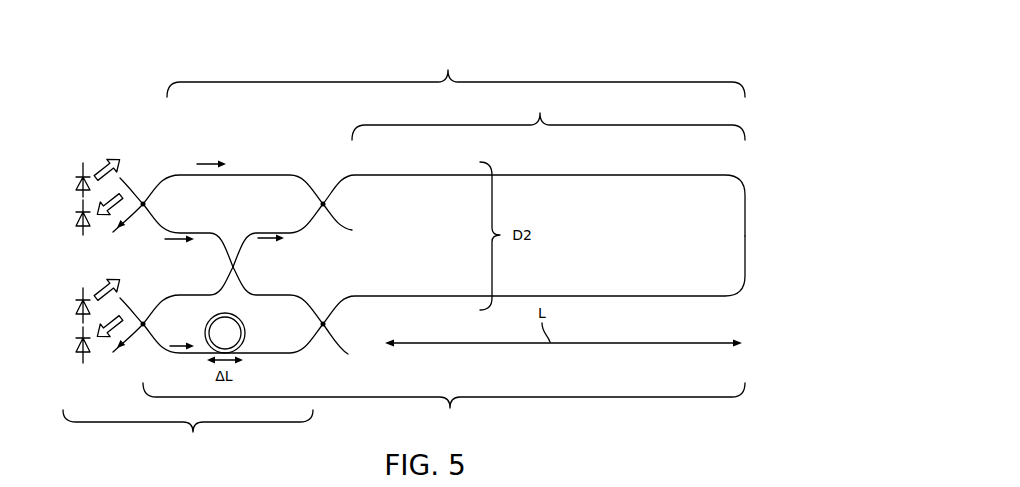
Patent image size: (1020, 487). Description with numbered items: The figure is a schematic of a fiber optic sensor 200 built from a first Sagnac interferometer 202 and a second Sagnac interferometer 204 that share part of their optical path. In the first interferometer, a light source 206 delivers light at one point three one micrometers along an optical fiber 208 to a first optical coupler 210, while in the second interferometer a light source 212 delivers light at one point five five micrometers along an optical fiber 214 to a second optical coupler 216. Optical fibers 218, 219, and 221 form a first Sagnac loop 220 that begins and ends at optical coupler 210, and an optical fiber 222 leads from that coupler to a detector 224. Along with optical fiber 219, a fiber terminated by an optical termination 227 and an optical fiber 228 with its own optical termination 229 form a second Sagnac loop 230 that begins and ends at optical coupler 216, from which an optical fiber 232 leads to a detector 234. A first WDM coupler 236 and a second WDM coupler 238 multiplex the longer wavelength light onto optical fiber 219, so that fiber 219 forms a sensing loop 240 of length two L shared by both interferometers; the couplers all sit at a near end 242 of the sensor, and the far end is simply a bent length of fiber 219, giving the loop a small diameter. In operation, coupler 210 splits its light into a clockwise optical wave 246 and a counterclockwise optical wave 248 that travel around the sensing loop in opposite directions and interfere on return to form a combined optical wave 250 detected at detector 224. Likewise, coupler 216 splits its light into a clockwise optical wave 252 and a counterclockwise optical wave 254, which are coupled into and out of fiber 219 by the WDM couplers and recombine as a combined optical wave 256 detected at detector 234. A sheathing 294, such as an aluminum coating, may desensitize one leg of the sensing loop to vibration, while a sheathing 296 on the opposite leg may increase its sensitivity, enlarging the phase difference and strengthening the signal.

The fiber optic sensor 200 is at (738, 77).
The first Sagnac interferometer 202 is at (250, 101).
The second Sagnac interferometer 204 is at (339, 402).
The light source 206 is at (78, 181).
The optical fiber 208 is at (122, 176).
The first optical coupler 210 is at (146, 199).
The light source 212 is at (78, 306).
The optical fiber 214 is at (127, 301).
The second optical coupler 216 is at (146, 320).
The optical fiber 218 is at (275, 173).
The optical fiber 219 is at (564, 249).
The first Sagnac loop 220 is at (456, 73).
The optical fiber 221 is at (129, 216).
The optical fiber 222 is at (117, 239).
The detector 224 is at (78, 218).
The optical termination 227 is at (351, 223).
The optical fiber 228 is at (285, 354).
The optical termination 229 is at (350, 351).
The second Sagnac loop 230 is at (444, 409).
The optical fiber 232 is at (118, 357).
The detector 234 is at (78, 345).
The first WDM coupler 236 is at (324, 200).
The second WDM coupler 238 is at (324, 320).
The sensing loop 240 is at (548, 116).
The near end 242 is at (188, 432).
The clockwise optical wave 246 is at (203, 160).
The counterclockwise optical wave 248 is at (168, 242).
The combined optical wave 250 is at (148, 207).
The clockwise optical wave 252 is at (270, 242).
The counterclockwise optical wave 254 is at (180, 347).
The combined optical wave 256 is at (128, 338).
The sheathing 294 is at (665, 294).
The sheathing 296 is at (660, 178).